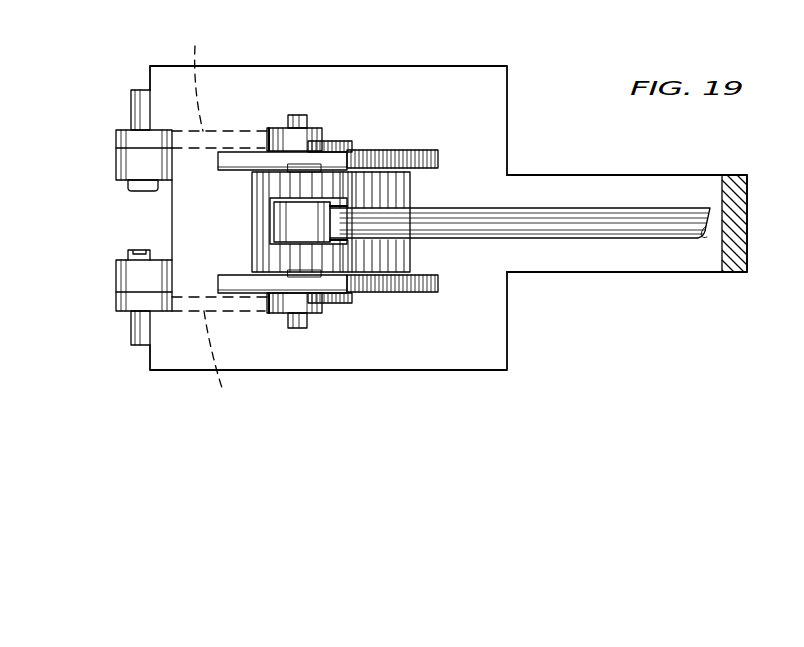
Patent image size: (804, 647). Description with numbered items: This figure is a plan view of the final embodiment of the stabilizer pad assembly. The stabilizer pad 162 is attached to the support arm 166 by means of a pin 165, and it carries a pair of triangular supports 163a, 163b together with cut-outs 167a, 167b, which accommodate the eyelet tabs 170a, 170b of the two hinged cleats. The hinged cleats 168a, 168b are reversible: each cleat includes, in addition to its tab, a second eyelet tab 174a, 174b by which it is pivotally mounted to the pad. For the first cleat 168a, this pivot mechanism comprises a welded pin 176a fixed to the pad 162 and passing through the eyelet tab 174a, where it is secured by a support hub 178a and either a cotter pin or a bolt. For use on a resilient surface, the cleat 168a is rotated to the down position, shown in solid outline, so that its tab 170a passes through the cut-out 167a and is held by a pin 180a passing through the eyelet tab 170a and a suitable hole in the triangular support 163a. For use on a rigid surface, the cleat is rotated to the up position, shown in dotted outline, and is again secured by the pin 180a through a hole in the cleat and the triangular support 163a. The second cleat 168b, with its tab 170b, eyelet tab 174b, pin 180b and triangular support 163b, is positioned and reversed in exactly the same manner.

The stabilizer pad 162 is at (490, 348).
The triangular support 163a is at (422, 295).
The triangular support 163b is at (409, 150).
The pin 165 is at (362, 274).
The support arm 166 is at (592, 188).
The cut-out 167a is at (320, 308).
The cut-out 167b is at (330, 138).
The hinged cleat 168a is at (219, 356).
The hinged cleat 168b is at (219, 89).
The eyelet tab 170a is at (288, 303).
The eyelet tab 170b is at (285, 142).
The eyelet tab 174a is at (116, 302).
The eyelet tab 174b is at (116, 135).
The welded pin 176a is at (128, 327).
The support hub 178a is at (116, 275).
The pin 180a is at (300, 328).
The pin 180b is at (300, 128).